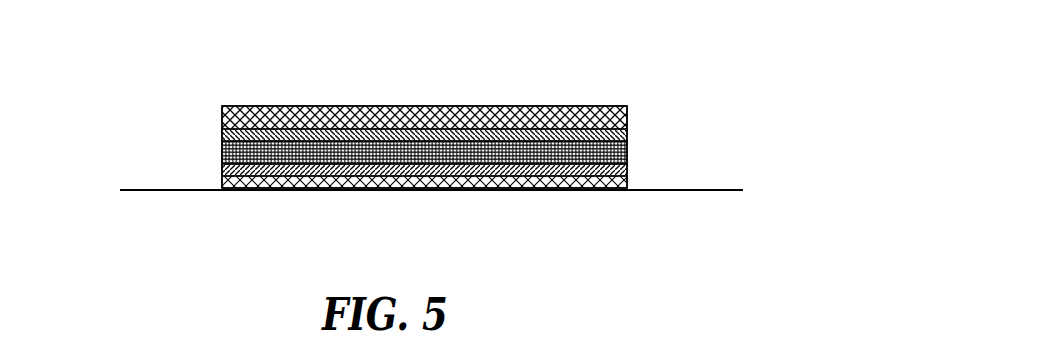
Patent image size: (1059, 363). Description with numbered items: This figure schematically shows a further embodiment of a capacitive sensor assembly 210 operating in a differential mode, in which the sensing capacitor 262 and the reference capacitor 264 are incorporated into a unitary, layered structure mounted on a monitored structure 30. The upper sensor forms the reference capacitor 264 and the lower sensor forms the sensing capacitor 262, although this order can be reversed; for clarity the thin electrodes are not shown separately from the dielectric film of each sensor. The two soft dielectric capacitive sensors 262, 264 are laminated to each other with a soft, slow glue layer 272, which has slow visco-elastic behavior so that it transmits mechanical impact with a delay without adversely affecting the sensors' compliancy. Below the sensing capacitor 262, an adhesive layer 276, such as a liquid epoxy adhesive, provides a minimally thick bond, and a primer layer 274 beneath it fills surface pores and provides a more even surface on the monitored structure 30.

The capacitive sensor assembly 210 is at (399, 107).
The reference capacitor 264 is at (627, 117).
The slow glue layer 272 is at (222, 135).
The sensing capacitor 262 is at (627, 147).
The adhesive layer 276 is at (222, 172).
The primer layer 274 is at (627, 176).
The monitored structure 30 is at (165, 191).